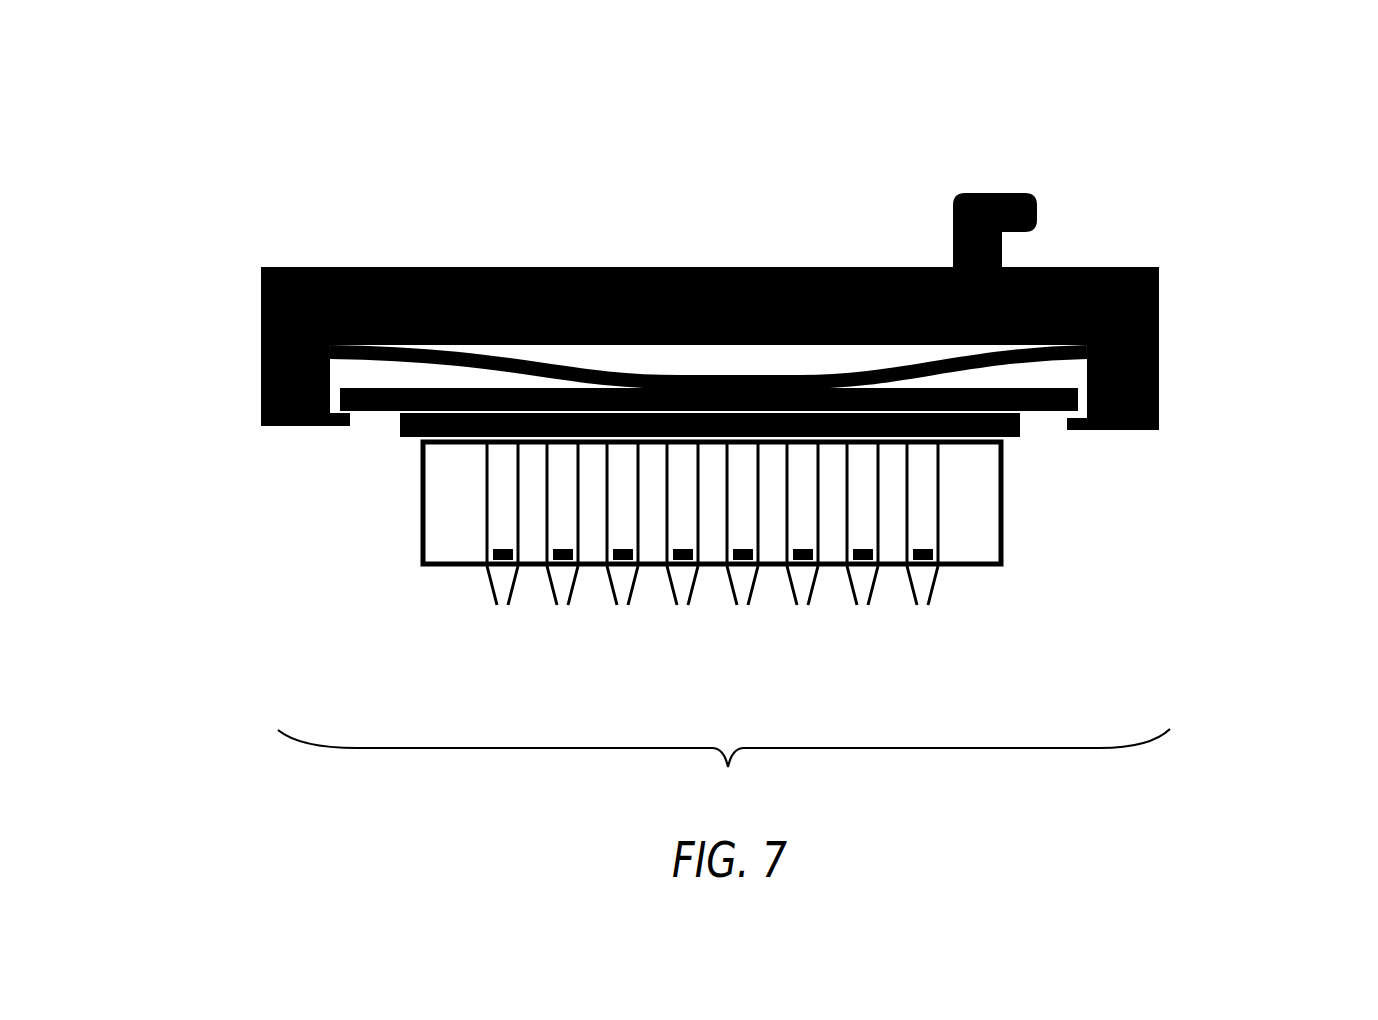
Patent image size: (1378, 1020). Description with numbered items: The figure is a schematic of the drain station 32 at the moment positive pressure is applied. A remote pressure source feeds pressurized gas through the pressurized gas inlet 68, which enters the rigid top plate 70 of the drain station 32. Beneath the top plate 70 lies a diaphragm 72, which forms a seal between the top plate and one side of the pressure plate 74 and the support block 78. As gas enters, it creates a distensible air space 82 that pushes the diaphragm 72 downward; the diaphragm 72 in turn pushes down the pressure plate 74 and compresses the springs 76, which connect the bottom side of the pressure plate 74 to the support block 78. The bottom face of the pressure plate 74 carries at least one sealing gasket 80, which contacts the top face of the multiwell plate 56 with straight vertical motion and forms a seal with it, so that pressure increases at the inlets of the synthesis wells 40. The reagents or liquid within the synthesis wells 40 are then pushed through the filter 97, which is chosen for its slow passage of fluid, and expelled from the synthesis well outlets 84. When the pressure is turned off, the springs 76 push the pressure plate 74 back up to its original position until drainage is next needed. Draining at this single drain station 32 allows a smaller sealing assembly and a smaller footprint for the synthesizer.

The drain station 32 is at (724, 771).
The synthesis wells 40 is at (947, 505).
The multiwell plate 56 is at (1007, 542).
The pressurized gas inlet 68 is at (1018, 193).
The top plate 70 is at (1162, 307).
The diaphragm 72 is at (257, 347).
The pressure plate 74 is at (1043, 425).
The springs 76 is at (1115, 435).
The support block 78 is at (1160, 390).
The sealing gasket 80 is at (398, 432).
The distensible air space 82 is at (533, 352).
The synthesis well outlets 84 is at (857, 612).
The filter 97 is at (480, 555).